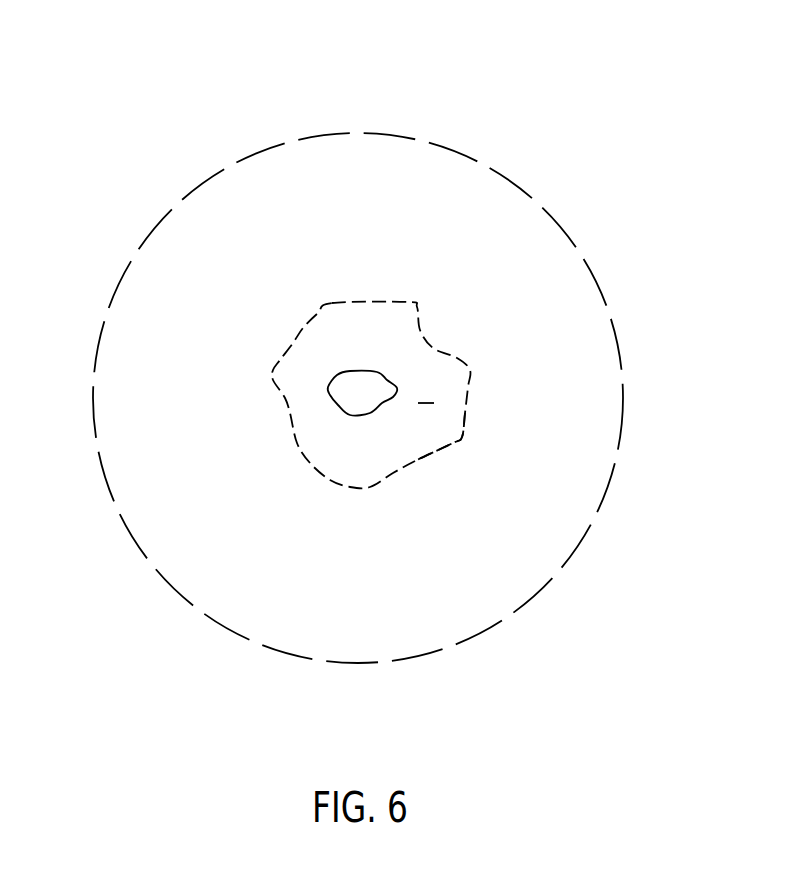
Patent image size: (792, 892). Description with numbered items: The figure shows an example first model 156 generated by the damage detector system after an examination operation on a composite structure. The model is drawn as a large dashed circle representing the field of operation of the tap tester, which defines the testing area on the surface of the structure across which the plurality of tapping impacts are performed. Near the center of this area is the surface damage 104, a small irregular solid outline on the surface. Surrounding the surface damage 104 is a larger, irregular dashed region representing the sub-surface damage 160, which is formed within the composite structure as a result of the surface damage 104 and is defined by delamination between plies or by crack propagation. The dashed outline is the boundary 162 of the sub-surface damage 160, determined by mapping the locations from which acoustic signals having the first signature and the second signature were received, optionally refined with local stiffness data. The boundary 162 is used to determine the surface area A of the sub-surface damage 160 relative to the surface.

The surface damage 104 is at (333, 388).
The first model 156 is at (577, 90).
The sub-surface damage 160 is at (388, 262).
The boundary 162 is at (452, 442).